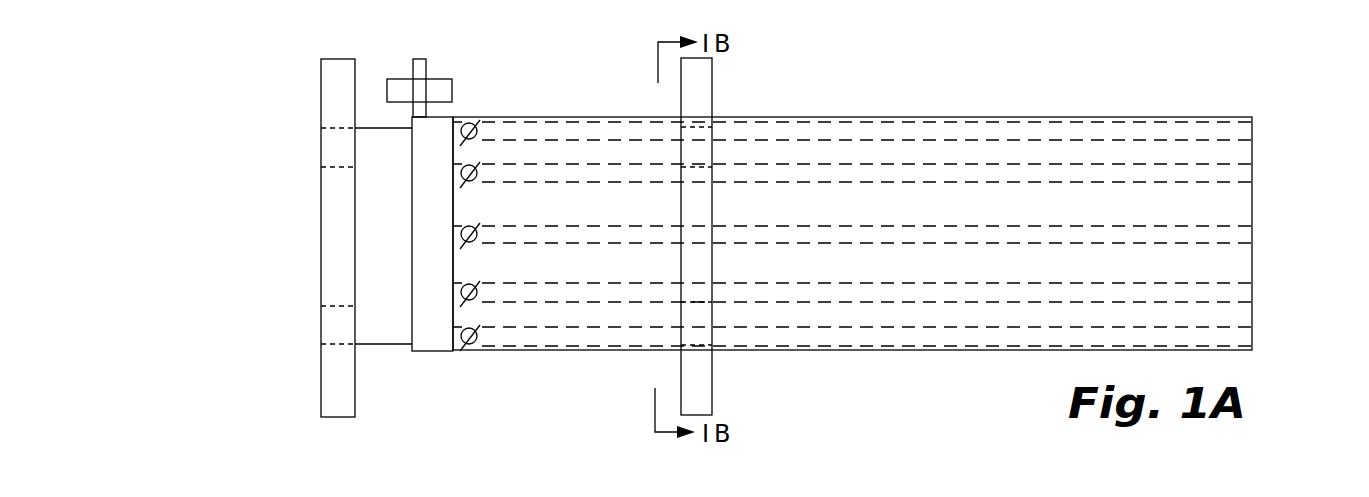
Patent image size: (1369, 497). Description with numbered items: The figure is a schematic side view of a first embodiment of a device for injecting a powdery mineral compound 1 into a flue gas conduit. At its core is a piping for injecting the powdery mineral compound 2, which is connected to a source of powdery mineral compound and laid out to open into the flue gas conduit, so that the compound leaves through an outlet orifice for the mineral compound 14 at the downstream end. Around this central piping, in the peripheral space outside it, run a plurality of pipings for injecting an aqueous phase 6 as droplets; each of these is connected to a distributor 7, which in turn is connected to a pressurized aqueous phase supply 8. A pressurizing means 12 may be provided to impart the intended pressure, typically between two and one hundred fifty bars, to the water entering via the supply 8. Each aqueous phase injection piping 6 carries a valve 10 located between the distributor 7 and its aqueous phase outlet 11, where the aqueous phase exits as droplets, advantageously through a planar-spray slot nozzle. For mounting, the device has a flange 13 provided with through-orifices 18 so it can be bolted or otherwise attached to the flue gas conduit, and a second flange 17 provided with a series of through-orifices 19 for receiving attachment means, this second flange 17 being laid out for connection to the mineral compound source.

The device for injecting a powdery mineral compound 1 is at (976, 90).
The piping for injecting the powdery mineral compound 2 is at (368, 230).
The piping for injecting an aqueous phase 6 is at (867, 130).
The distributor 7 is at (453, 120).
The aqueous phase supply 8 is at (413, 62).
The valve 10 is at (480, 121).
The aqueous phase outlet 11 is at (1252, 132).
The pressurizing means 12 is at (435, 145).
The flange 13 is at (693, 197).
The outlet orifice for the mineral compound 14 is at (1252, 257).
The second flange 17 is at (322, 210).
The through-orifices 18 is at (698, 147).
The through-orifices 19 is at (332, 147).